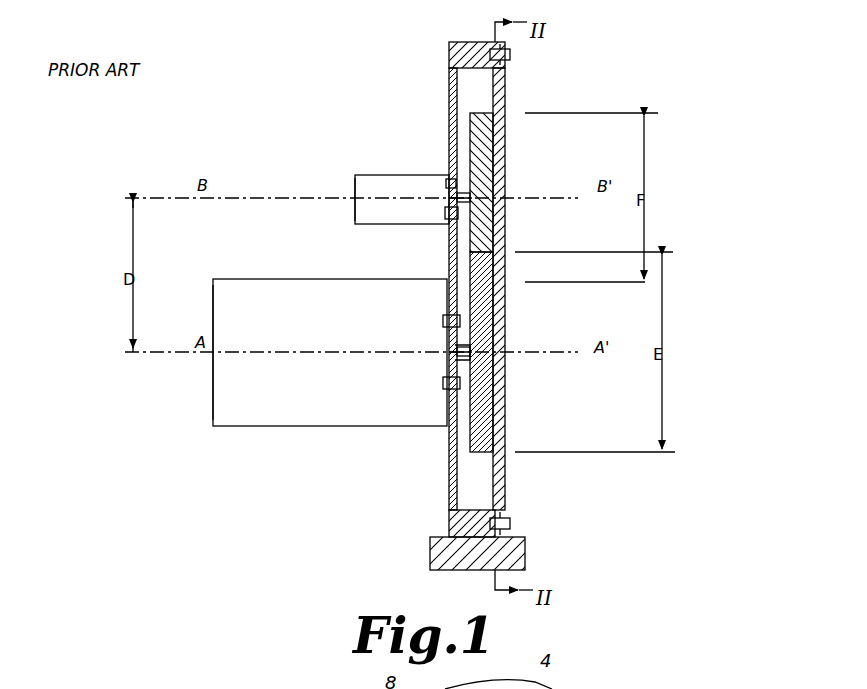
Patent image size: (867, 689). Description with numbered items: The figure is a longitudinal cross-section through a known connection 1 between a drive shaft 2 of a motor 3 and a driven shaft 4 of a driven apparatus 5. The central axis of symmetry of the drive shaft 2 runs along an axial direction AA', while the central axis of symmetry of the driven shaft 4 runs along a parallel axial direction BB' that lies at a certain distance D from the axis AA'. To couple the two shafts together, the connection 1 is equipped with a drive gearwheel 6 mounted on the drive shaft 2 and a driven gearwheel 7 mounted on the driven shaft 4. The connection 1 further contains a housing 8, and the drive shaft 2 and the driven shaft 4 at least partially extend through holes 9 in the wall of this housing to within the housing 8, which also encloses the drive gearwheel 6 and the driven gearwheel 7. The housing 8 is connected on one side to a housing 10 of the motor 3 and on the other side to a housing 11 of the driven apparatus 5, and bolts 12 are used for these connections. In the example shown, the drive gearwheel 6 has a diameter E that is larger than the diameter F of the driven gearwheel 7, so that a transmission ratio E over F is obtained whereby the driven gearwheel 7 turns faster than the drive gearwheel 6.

The connection 1 is at (715, 50).
The drive shaft 2 is at (460, 350).
The motor 3 is at (245, 300).
The driven shaft 4 is at (450, 172).
The driven apparatus 5 is at (386, 190).
The drive gearwheel 6 is at (505, 313).
The driven gearwheel 7 is at (505, 152).
The housing 8 is at (452, 55).
The holes 9 is at (448, 190).
The housing of the motor 10 is at (213, 398).
The housing of the driven apparatus 11 is at (355, 187).
The bolts 12 is at (448, 178).